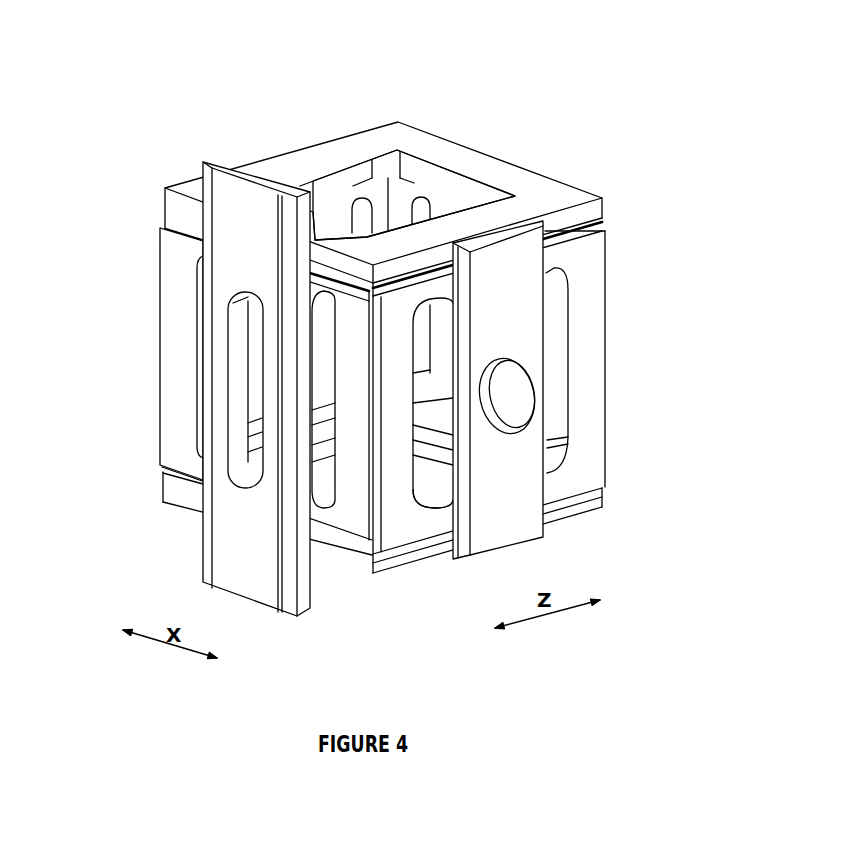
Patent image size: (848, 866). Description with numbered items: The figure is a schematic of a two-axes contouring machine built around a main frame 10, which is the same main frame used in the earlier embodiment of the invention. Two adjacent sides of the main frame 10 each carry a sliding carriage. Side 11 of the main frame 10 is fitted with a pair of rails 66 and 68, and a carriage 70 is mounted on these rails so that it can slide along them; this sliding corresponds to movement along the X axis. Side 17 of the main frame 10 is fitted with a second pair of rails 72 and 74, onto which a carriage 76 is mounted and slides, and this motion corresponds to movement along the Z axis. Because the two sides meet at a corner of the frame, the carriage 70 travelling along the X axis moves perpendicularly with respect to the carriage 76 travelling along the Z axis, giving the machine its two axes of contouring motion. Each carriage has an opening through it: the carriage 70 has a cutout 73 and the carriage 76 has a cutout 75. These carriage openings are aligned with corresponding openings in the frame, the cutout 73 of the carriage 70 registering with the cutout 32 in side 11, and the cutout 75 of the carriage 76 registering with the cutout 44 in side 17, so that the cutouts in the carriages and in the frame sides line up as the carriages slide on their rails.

The main frame 10 is at (497, 173).
The side 11 is at (182, 213).
The side 17 is at (588, 460).
The cutout 32 is at (317, 496).
The cutout 44 is at (438, 497).
The rail 66 is at (165, 231).
The rail 68 is at (165, 484).
The carriage 70 is at (250, 193).
The rail 72 is at (603, 217).
The cutout 73 is at (240, 418).
The rail 74 is at (602, 507).
The cutout 75 is at (523, 404).
The carriage 76 is at (537, 324).